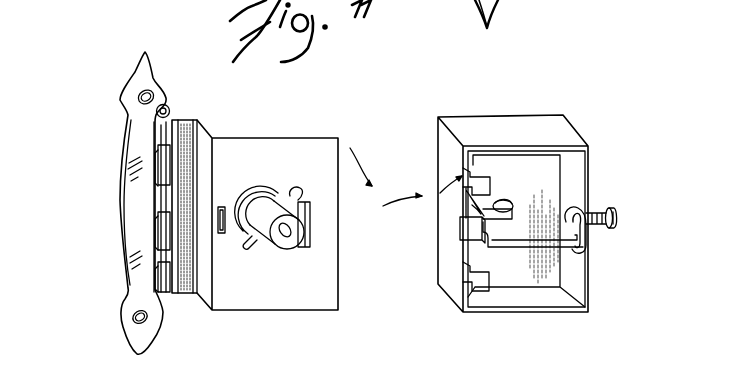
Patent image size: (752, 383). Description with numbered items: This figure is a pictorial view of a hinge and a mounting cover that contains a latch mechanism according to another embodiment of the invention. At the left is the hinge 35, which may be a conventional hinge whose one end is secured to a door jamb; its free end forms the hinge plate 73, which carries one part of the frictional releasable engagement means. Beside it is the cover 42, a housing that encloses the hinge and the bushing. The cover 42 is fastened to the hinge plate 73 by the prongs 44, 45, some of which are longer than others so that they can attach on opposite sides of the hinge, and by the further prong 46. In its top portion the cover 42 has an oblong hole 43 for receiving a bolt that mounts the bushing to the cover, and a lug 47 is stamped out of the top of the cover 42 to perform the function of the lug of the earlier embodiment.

The hinge 35 is at (114, 267).
The hinge plate 73 is at (283, 297).
The cover 42 is at (560, 133).
The oblong hole 43 is at (515, 203).
The prong 44 is at (470, 283).
The prong 45 is at (460, 235).
The prong 46 is at (602, 250).
The lug 47 is at (463, 210).